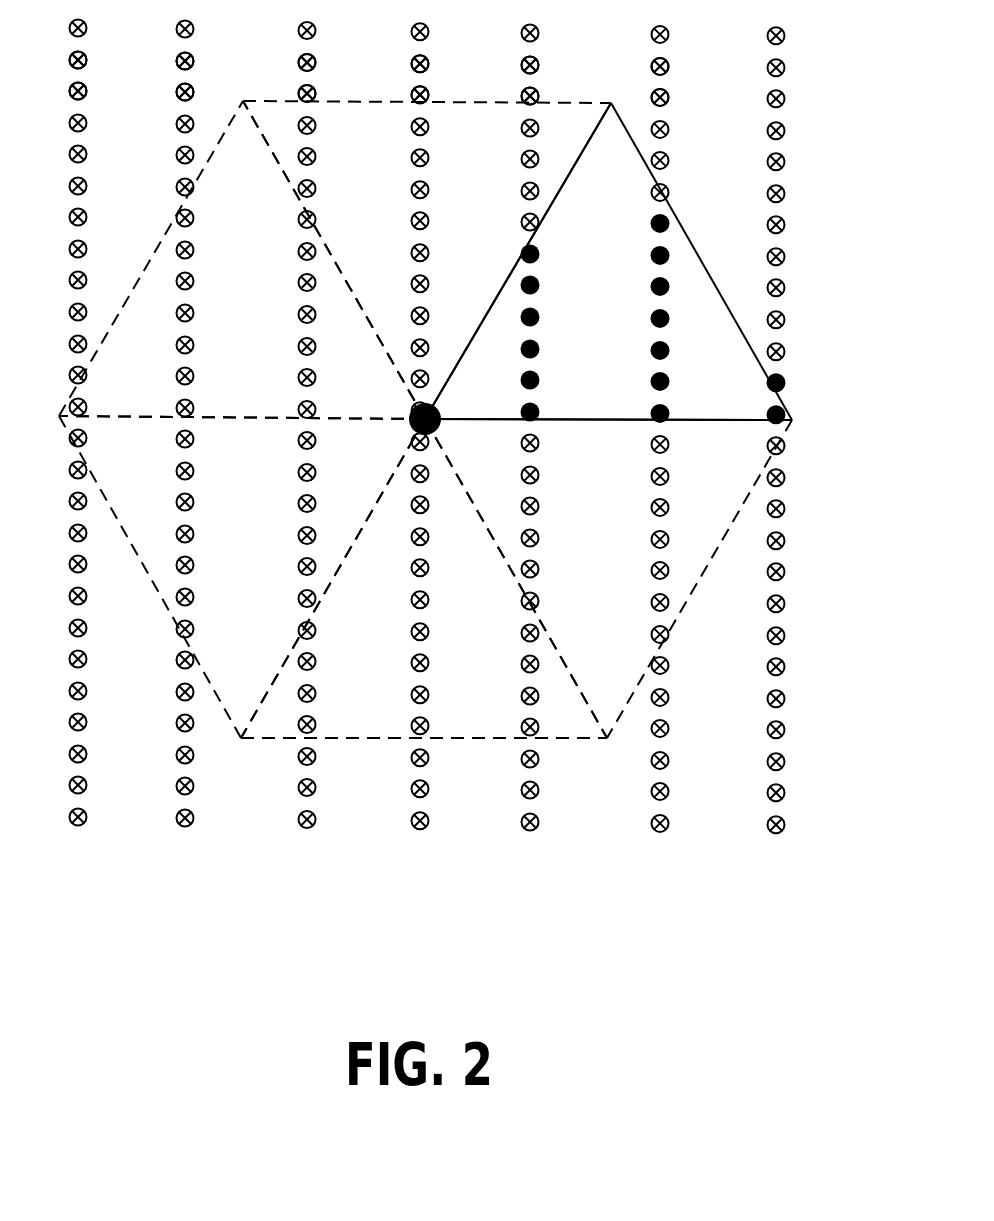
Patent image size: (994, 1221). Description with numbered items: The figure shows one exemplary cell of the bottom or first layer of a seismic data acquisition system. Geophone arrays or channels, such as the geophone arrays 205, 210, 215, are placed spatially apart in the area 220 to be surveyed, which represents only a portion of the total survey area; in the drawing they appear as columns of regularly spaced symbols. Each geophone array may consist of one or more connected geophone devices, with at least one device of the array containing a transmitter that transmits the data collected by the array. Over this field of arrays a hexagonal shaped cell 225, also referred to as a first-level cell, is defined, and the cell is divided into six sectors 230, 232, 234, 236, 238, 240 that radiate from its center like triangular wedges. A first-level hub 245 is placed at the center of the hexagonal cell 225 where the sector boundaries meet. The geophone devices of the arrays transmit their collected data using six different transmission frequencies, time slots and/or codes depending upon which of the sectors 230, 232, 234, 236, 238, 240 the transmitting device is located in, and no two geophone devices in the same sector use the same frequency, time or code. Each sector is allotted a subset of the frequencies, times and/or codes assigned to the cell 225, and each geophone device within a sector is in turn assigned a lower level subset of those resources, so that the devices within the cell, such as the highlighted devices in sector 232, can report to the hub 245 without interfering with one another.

The geophone array 205 is at (786, 34).
The geophone array 210 is at (786, 66).
The geophone array 215 is at (786, 98).
The area 220 is at (218, 798).
The hexagonal shaped cell 225 is at (425, 419).
The sector 230 is at (617, 543).
The sector 232 is at (619, 239).
The sector 234 is at (395, 166).
The sector 236 is at (266, 301).
The sector 238 is at (268, 522).
The sector 240 is at (379, 641).
The Level 1 hub 245 is at (438, 430).